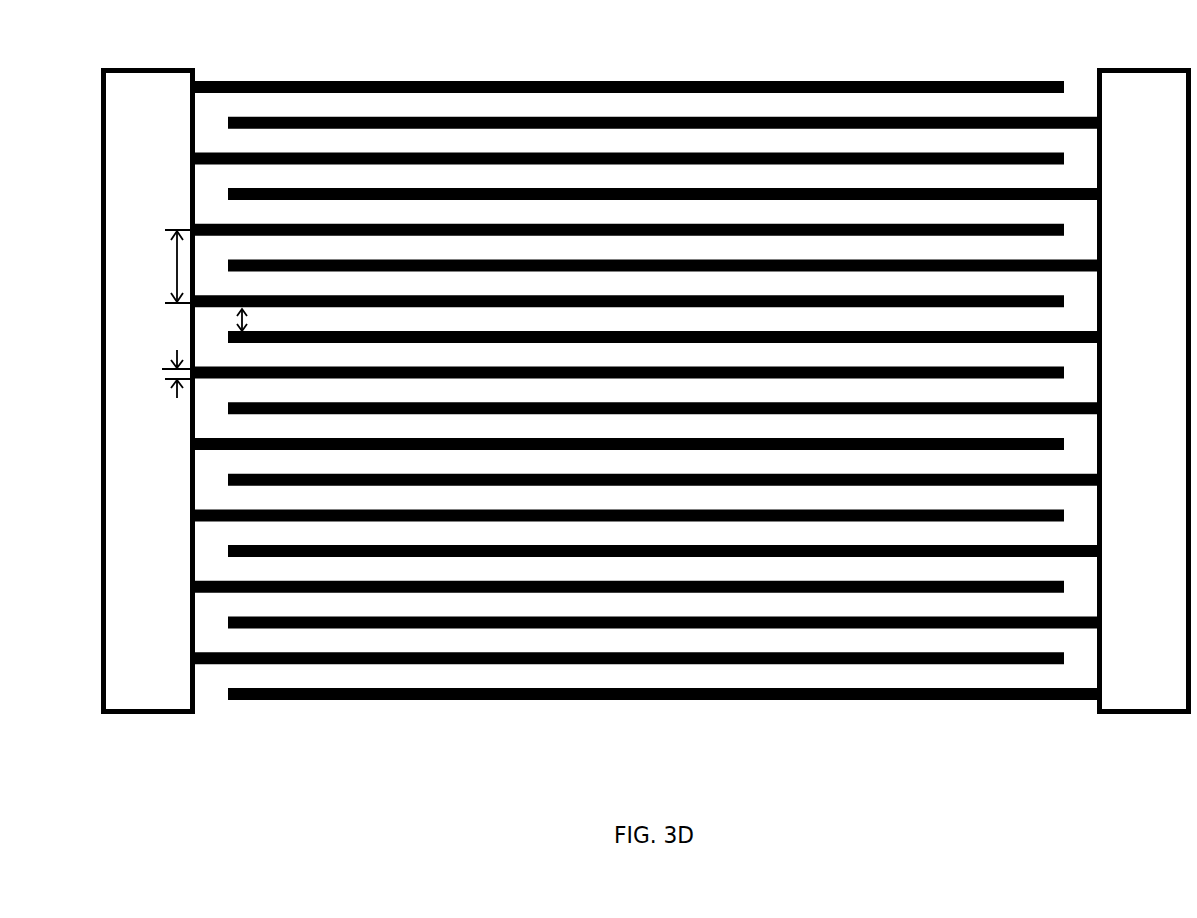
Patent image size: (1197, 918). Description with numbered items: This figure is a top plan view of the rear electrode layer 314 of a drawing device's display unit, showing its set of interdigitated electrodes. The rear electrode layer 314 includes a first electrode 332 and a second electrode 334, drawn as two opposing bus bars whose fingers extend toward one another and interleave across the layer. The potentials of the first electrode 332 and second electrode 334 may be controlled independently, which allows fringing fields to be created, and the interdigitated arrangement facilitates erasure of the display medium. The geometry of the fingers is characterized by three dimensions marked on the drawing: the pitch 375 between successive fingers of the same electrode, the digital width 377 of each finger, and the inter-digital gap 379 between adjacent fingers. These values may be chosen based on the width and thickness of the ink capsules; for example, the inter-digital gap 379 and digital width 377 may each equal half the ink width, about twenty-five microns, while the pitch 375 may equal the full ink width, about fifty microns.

The rear electrode layer 314 is at (593, 48).
The first electrode 332 is at (148, 72).
The second electrode 334 is at (1137, 74).
The pitch 375 is at (172, 265).
The digital width 377 is at (177, 398).
The inter-digital gap 379 is at (236, 325).